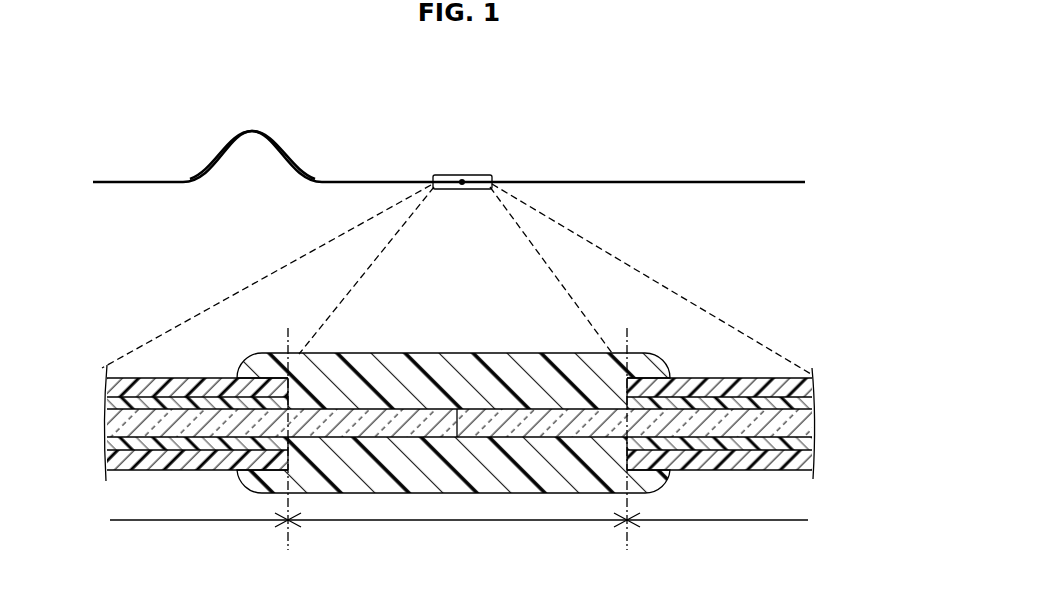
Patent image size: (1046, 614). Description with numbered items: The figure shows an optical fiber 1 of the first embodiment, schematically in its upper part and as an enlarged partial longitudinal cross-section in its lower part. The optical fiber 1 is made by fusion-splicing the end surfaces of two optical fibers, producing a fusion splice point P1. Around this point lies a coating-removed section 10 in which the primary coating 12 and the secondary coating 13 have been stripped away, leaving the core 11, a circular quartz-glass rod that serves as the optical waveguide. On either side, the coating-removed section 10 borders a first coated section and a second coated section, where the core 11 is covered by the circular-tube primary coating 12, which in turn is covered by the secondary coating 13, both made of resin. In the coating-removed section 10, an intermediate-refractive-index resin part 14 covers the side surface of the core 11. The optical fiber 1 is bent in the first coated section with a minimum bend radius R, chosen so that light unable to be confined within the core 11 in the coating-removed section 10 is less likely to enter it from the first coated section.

The optical fiber 1 is at (763, 110).
The minimum bend radius R is at (256, 144).
The coating-removed section 10 is at (443, 177).
The core 11 is at (542, 409).
The primary coating 12 is at (120, 403).
The secondary coating 13 is at (120, 388).
The intermediate-refractive-index resin part 14 is at (369, 354).
The fusion splice point P1 is at (462, 187).